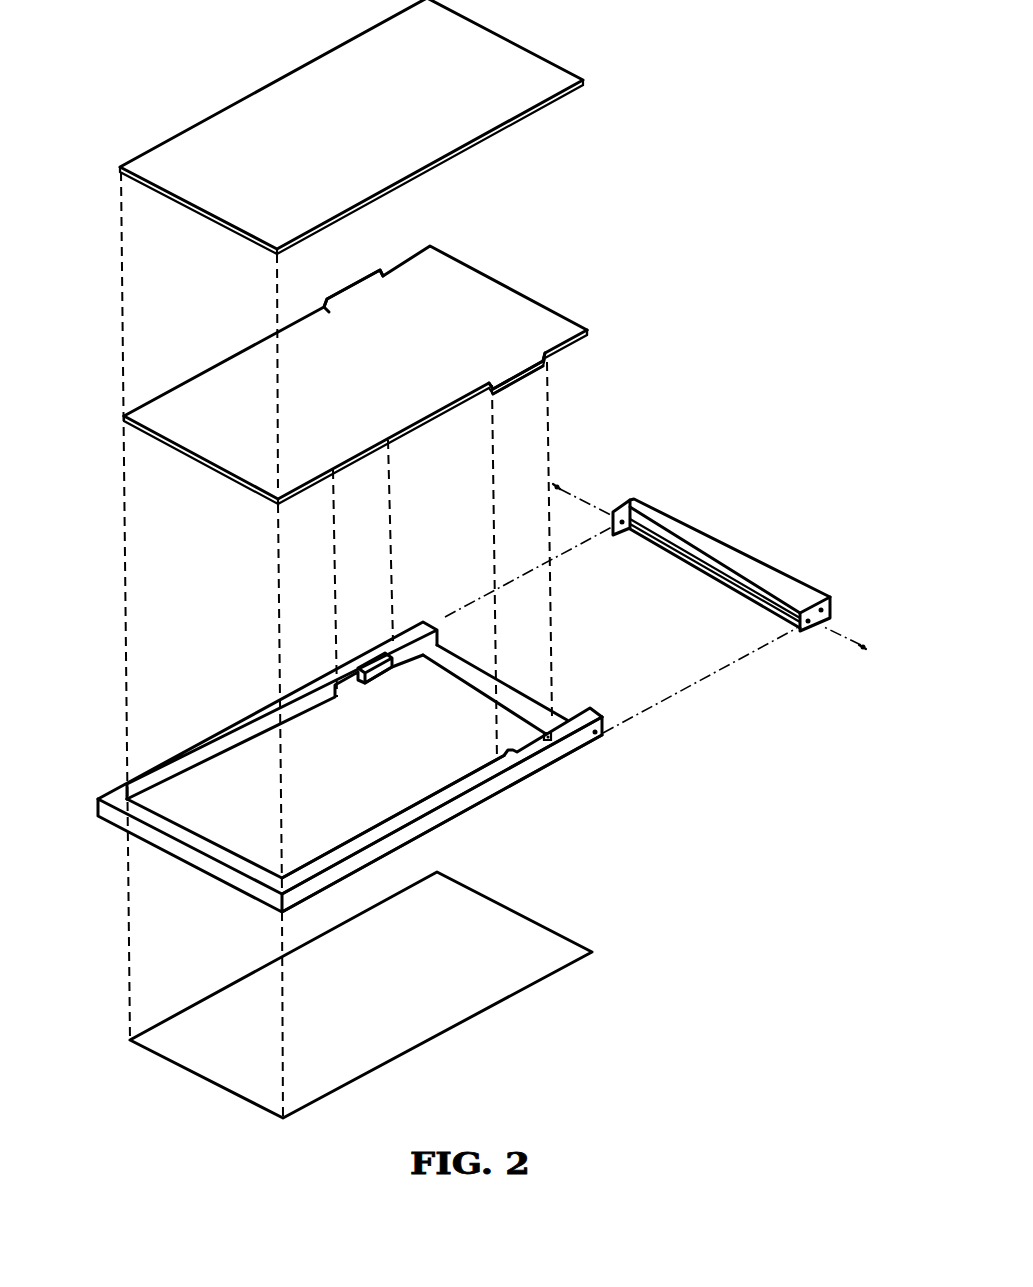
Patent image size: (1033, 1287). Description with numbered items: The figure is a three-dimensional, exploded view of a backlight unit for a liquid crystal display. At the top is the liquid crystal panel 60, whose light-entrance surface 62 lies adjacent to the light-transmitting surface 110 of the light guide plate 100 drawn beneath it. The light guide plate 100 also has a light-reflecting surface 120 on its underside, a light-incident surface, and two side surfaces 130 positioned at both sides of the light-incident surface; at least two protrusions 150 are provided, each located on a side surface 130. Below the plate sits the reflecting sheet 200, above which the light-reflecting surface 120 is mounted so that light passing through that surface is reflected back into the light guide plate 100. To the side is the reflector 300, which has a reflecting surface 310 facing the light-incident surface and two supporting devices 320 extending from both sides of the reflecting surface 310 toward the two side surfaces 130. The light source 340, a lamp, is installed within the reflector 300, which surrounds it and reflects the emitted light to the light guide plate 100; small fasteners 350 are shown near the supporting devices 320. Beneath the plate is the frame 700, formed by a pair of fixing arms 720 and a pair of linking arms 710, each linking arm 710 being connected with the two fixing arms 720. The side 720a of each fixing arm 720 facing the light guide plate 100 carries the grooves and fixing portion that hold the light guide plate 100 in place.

The liquid crystal panel 60 is at (393, 127).
The light-entrance surface 62 is at (557, 102).
The light guide plate 100 is at (432, 354).
The light-transmitting surface 110 is at (468, 297).
The light-reflecting surface 120 is at (562, 353).
The side surfaces 130 is at (585, 332).
The protrusions 150 is at (357, 287).
The reflecting sheet 200 is at (592, 952).
The reflector 300 is at (666, 590).
The reflecting surface 310 is at (753, 558).
The supporting devices 320 is at (807, 631).
The light source 340 is at (673, 537).
The screw 350 is at (870, 653).
The frame 700 is at (325, 775).
The linking arms 710 is at (197, 840).
The fixing arms 720 is at (350, 767).
The side of fixing arm 720a is at (315, 707).